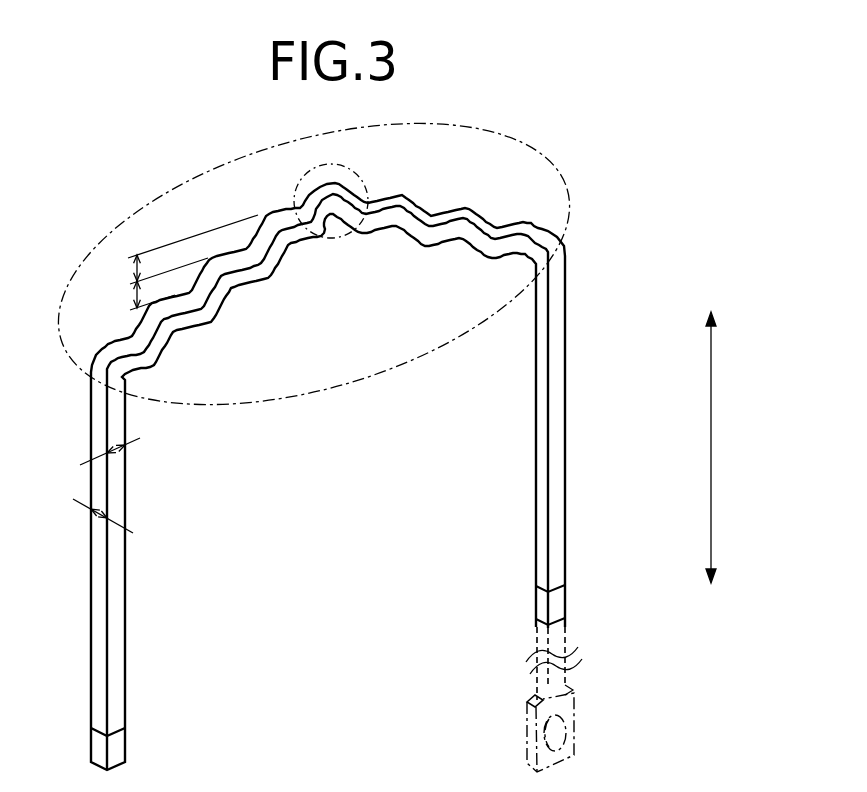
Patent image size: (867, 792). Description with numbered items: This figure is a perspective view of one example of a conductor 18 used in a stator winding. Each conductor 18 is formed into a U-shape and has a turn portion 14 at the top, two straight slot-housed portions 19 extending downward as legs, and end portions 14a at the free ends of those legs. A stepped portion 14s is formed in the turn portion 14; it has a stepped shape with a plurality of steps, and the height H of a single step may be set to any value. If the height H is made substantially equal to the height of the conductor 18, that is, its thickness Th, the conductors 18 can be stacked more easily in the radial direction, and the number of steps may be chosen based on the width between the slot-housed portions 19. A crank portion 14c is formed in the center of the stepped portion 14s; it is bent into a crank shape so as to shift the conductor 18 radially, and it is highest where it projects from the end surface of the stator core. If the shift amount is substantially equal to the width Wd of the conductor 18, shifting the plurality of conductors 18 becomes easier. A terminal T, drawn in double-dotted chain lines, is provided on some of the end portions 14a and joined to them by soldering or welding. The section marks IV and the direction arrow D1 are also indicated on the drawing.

The turn portion 14 is at (351, 440).
The end portion 14a is at (589, 580).
The crank portion 14c is at (347, 237).
The stepped portion 14s is at (253, 400).
The conductor 18 is at (147, 193).
The slot-housed portion 19 is at (589, 270).
The terminal T is at (530, 733).
The height of a single step H is at (183, 267).
The thickness Th is at (122, 452).
The width Wd is at (99, 514).
The section line IV- IV is at (83, 595).
The first direction D1 is at (709, 467).